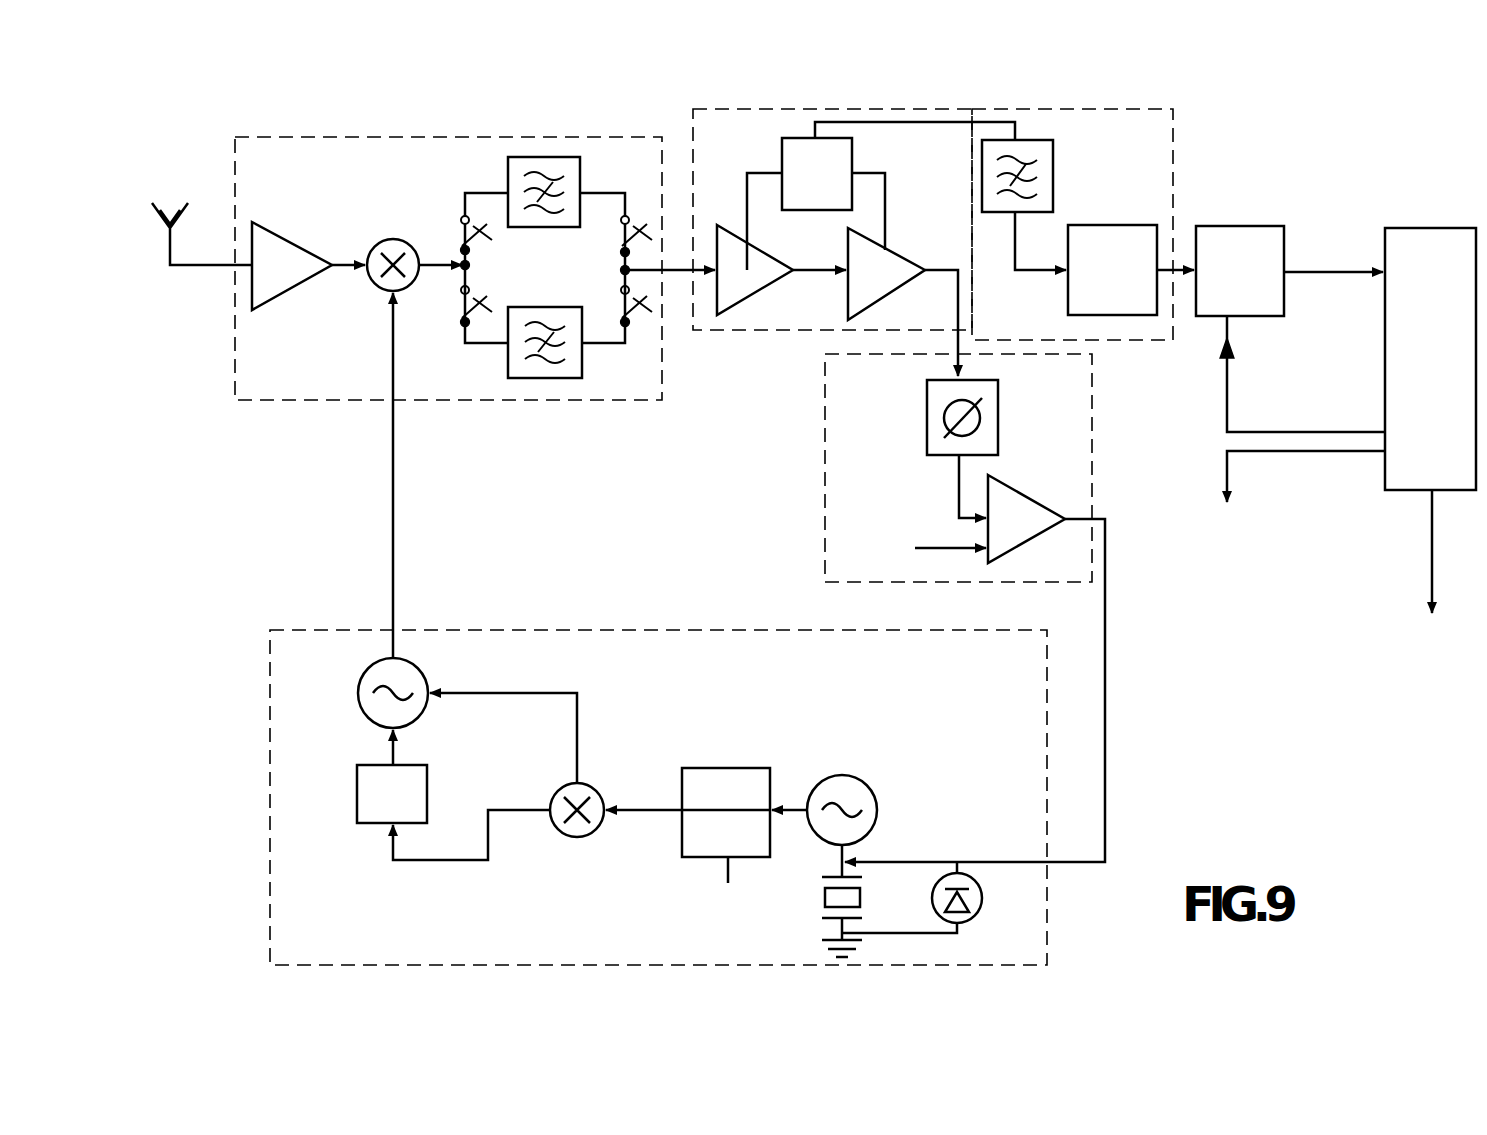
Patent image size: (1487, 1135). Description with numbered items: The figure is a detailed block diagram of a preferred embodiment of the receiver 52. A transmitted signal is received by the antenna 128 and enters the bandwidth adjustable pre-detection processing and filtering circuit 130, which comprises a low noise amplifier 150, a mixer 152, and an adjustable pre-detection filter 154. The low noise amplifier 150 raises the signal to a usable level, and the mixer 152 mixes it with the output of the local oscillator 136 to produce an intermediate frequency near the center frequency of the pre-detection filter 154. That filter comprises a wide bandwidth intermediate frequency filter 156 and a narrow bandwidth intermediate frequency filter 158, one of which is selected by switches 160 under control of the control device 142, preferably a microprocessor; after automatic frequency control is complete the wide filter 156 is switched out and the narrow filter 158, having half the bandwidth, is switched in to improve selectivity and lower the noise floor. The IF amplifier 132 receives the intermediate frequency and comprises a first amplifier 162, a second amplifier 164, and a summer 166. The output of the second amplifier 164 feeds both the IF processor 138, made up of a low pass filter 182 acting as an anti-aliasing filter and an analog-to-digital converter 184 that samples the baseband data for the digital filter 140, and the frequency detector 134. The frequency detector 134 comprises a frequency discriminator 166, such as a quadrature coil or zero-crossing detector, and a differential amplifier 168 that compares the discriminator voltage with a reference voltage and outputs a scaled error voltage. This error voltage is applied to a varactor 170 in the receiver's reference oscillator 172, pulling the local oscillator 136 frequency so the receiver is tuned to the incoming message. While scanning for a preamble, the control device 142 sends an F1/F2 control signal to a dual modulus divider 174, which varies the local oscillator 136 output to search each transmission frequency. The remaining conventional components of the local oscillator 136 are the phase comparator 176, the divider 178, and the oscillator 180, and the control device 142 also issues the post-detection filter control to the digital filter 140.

The receiver 52 is at (1268, 161).
The antenna 128 is at (170, 268).
The bandwidth adjustable pre-detection processing and filtering circuit 130 is at (312, 137).
The IF amplifier 132 is at (783, 110).
The frequency detector 134 is at (825, 440).
The local oscillator 136 is at (497, 630).
The IF processor 138 is at (1043, 112).
The digital filter 140 is at (1255, 226).
The control device 142 is at (1440, 222).
The low noise amplifier 150 is at (276, 226).
The mixer 152 is at (393, 238).
The adjustable pre-detection filter 154 is at (466, 176).
The wide bandwidth intermediate frequency filter 156 is at (555, 157).
The narrow bandwidth intermediate frequency filter 158 is at (506, 372).
The switches 160 is at (490, 233).
The first amplifier 162 is at (735, 315).
The second amplifier 164 is at (848, 300).
The summer / frequency discriminator 166 is at (782, 154).
The differential amplifier 168 is at (1030, 500).
The varactor 170 is at (978, 909).
The reference oscillator 172 is at (884, 782).
The dual modulus divider 174 is at (720, 768).
The phase comparator 176 is at (595, 786).
The divider 178 is at (357, 800).
The oscillator 180 is at (360, 686).
The low pass filter 182 is at (1053, 162).
The analog-to-digital converter 184 is at (1105, 225).